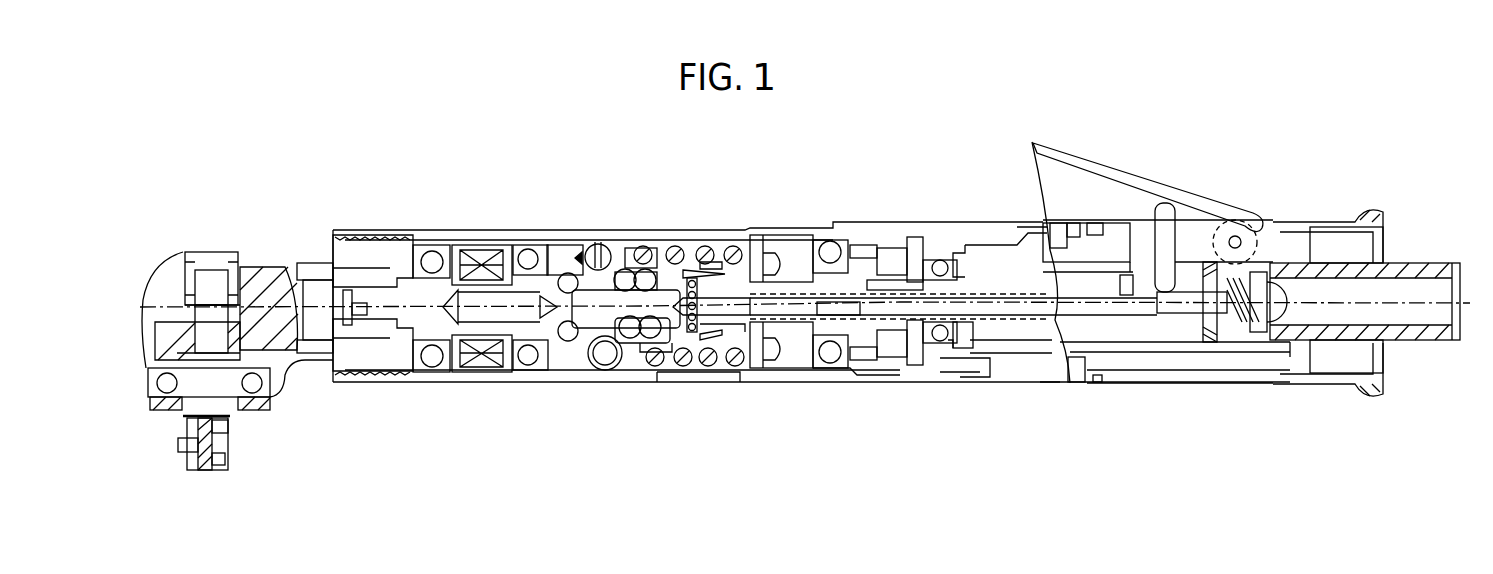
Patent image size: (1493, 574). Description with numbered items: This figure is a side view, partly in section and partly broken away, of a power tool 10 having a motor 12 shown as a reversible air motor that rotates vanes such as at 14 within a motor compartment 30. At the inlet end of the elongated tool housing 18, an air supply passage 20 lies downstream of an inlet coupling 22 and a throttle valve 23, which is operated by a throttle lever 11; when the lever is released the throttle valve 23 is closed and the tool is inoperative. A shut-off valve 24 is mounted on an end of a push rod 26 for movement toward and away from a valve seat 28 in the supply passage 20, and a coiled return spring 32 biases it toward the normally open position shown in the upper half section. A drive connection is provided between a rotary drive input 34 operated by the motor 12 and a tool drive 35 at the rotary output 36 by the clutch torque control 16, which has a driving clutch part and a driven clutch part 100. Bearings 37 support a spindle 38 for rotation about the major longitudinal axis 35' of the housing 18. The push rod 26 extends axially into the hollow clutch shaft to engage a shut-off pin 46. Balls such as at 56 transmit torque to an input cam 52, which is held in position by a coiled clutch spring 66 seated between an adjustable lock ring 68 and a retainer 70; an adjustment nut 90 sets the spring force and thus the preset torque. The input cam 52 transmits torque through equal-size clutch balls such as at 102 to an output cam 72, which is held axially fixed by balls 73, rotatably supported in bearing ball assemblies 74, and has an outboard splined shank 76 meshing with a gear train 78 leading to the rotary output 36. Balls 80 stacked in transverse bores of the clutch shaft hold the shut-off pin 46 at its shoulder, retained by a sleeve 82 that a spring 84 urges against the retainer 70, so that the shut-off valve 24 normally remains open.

The power tool 10 is at (565, 137).
The throttle lever 11 is at (1110, 165).
The motor 12 is at (1014, 213).
The vanes 14 is at (1009, 294).
The clutch torque control 16 is at (710, 262).
The tool housing 18 is at (1145, 386).
The air supply passage 20 is at (1187, 328).
The inlet coupling 22 is at (1442, 260).
The throttle valve 23 is at (1223, 340).
The shut-off valve 24 is at (1130, 262).
The push rod 26 is at (970, 305).
The valve seat 28 is at (1126, 288).
The motor compartment 30 is at (953, 292).
The return spring 32 is at (778, 320).
The rotary drive input 34 is at (825, 372).
The tool drive 35 is at (219, 449).
The major longitudinal axis 35' is at (768, 352).
The rotary output 36 is at (248, 417).
The bearings 37 is at (842, 372).
The spindle 38 is at (822, 278).
The shut-off pin 46 is at (737, 320).
The input cam 52 is at (613, 248).
The ball 56 is at (650, 339).
The clutch spring 66 is at (708, 367).
The lock ring 68 is at (757, 250).
The retainer 70 is at (668, 343).
The output cam 72 is at (577, 258).
The balls 73 is at (565, 353).
The bearing ball assemblies 74 is at (540, 248).
The splined shank 76 is at (478, 362).
The gear train 78 is at (172, 330).
The balls 80 is at (693, 335).
The sleeve 82 is at (687, 262).
The spring 84 is at (738, 266).
The adjustment nut 90 is at (757, 370).
The driven clutch part 100 is at (478, 307).
The clutch ball 102 is at (607, 368).